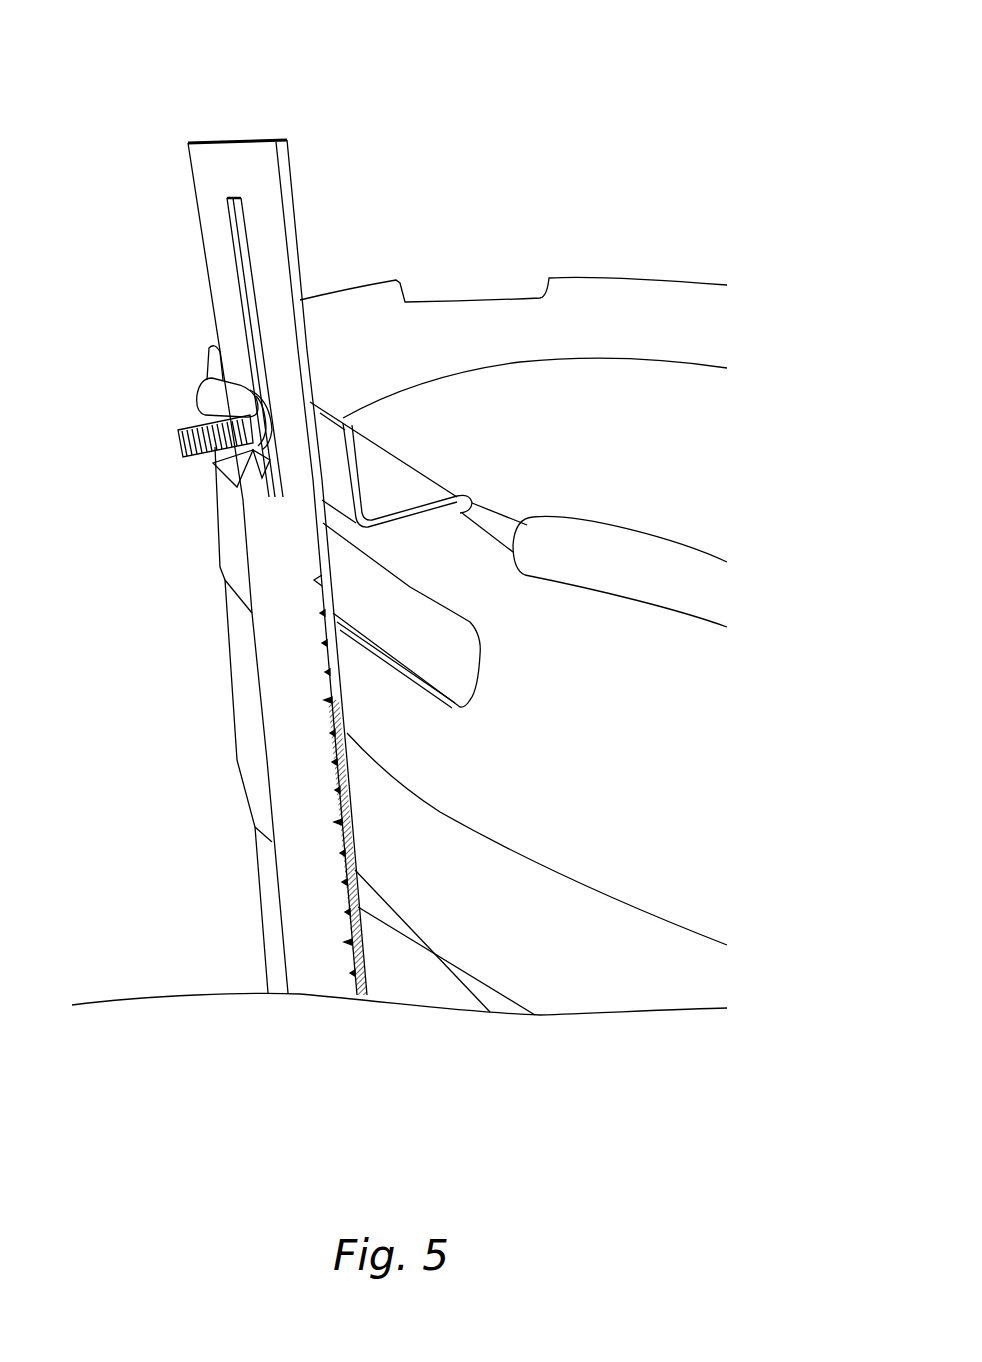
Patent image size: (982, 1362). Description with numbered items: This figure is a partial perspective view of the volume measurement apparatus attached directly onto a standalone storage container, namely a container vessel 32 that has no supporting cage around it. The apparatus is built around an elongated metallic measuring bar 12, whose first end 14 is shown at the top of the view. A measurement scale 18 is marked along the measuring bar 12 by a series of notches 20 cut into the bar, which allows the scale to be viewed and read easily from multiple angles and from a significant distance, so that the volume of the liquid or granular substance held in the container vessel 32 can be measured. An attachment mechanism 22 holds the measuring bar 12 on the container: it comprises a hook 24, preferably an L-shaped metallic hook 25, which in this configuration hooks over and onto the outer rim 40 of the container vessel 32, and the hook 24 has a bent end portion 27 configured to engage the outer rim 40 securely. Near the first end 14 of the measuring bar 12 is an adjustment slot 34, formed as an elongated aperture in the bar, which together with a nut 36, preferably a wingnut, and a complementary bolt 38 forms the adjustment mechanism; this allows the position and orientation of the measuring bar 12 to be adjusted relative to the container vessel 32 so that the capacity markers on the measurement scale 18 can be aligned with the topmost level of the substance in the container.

The elongated measuring bar 12 is at (273, 688).
The first end 14 is at (235, 142).
The measurement scale 18 is at (323, 700).
The notches 20 is at (333, 822).
The attachment mechanism 22 is at (363, 443).
The hook 24 is at (370, 462).
The L-shaped metallic hook 25 is at (400, 467).
The bent end portion 27 is at (473, 508).
The container vessel 32 is at (578, 763).
The adjustment slot 34 is at (242, 240).
The nut 36 is at (213, 393).
The bolt 38 is at (178, 443).
The outer rim 40 is at (628, 567).